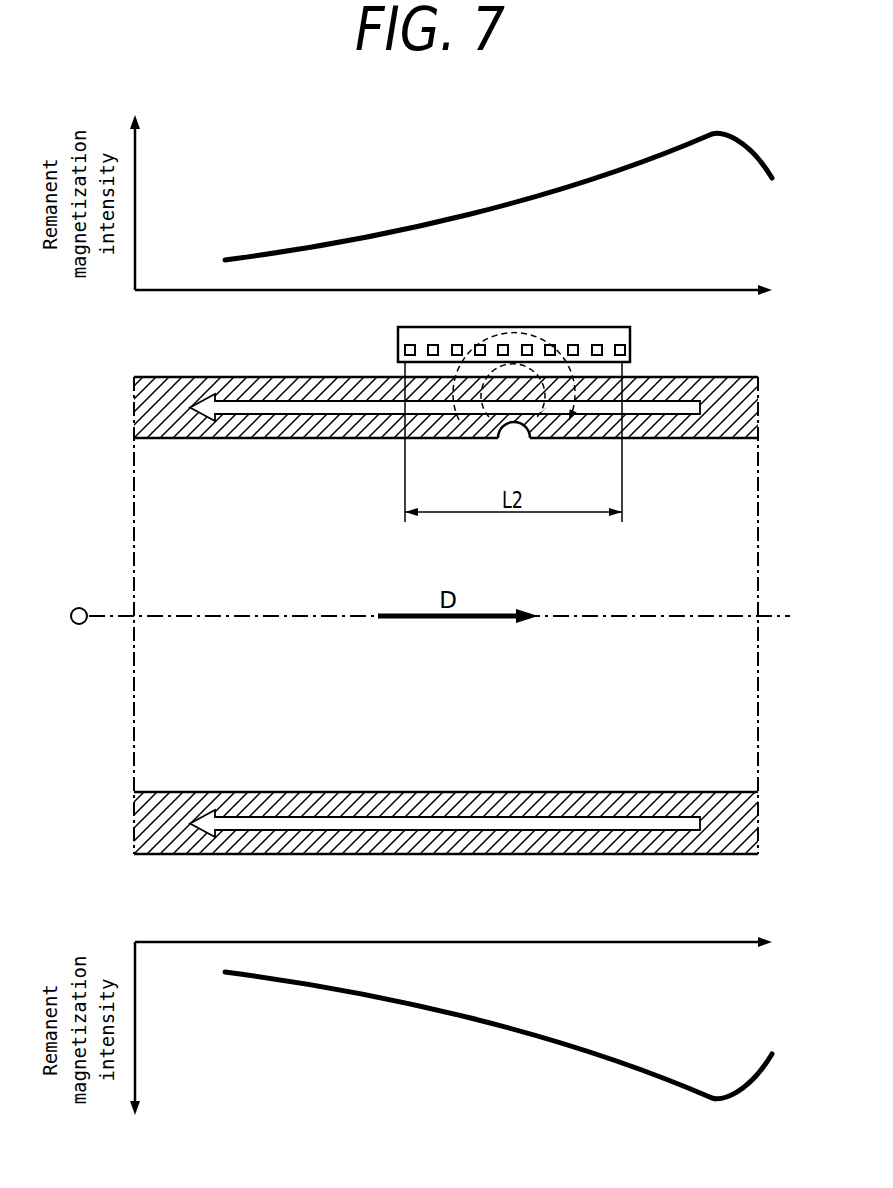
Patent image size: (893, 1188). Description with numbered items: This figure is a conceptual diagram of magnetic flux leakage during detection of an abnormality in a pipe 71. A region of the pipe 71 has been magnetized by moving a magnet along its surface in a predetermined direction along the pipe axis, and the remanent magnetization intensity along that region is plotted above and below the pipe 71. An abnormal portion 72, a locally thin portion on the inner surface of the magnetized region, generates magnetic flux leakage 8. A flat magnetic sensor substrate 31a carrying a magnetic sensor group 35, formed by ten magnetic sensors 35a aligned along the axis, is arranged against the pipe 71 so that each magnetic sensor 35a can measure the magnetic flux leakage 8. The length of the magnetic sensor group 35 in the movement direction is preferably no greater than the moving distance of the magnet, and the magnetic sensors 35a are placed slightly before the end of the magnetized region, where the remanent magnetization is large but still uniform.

The magnetic flux leakage 8 is at (497, 334).
The magnetic sensor substrate 31a is at (573, 333).
The magnetic sensor 35a is at (637, 350).
The magnetic sensor group 35 is at (576, 349).
The pipe 71 is at (170, 377).
The abnormal portion 72 is at (513, 450).